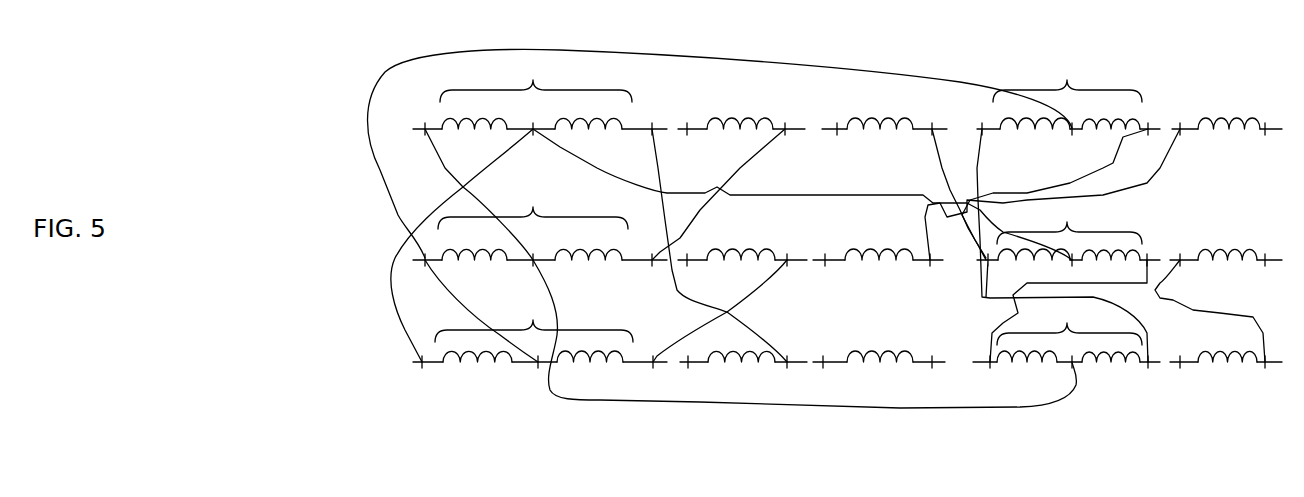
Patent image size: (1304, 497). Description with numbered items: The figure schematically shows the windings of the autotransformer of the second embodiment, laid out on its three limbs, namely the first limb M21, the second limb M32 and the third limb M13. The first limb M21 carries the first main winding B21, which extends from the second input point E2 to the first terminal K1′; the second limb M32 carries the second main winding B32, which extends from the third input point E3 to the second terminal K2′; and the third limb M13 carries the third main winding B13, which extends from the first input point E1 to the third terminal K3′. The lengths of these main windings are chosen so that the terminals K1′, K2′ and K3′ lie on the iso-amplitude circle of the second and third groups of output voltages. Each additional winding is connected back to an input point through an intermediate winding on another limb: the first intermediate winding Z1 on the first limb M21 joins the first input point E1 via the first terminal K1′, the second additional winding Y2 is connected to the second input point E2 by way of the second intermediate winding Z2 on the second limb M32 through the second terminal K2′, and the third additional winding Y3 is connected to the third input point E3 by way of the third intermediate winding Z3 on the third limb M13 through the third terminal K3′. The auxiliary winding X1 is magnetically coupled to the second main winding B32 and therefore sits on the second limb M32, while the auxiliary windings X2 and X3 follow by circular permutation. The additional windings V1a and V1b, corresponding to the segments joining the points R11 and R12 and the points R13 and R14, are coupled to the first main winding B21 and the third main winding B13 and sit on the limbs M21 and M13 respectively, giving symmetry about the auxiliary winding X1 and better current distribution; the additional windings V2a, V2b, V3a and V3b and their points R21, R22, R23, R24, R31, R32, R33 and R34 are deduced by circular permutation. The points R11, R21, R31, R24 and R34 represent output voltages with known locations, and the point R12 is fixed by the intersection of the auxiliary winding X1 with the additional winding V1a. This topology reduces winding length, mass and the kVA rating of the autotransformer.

The first limb M21 is at (803, 128).
The second limb M32 is at (808, 261).
The third limb M13 is at (807, 365).
The first main winding B21 is at (536, 94).
The second main winding B32 is at (533, 224).
The third main winding B13 is at (534, 330).
The first intermediate winding Z1 is at (588, 137).
The second intermediate winding Z2 is at (588, 266).
The third intermediate winding Z3 is at (590, 370).
The second additional winding Y2 is at (740, 107).
The third additional winding Y3 is at (741, 239).
The auxiliary winding X1 is at (1069, 232).
The auxiliary winding X2 is at (1069, 333).
The auxiliary winding X3 is at (1067, 94).
The additional winding V1a is at (1229, 108).
The additional winding V1b is at (1227, 347).
The additional winding V2a is at (1227, 241).
The additional winding V2b is at (880, 108).
The additional winding V3a is at (880, 345).
The additional winding V3b is at (879, 239).
The first input point E1 is at (735, 256).
The second input point E2 is at (740, 265).
The third input point E3 is at (727, 219).
The first terminal K1′ is at (708, 256).
The second terminal K2′ is at (709, 208).
The third terminal K3′ is at (719, 322).
The point R11 is at (1265, 140).
The point R12 is at (1067, 210).
The point R13 is at (1136, 322).
The point R14 is at (1188, 373).
The point R21 is at (1260, 272).
The point R22 is at (1123, 322).
The point R23 is at (1027, 256).
The point R24 is at (852, 140).
The point R31 is at (932, 373).
The point R32 is at (978, 256).
The point R33 is at (1037, 206).
The point R34 is at (823, 272).